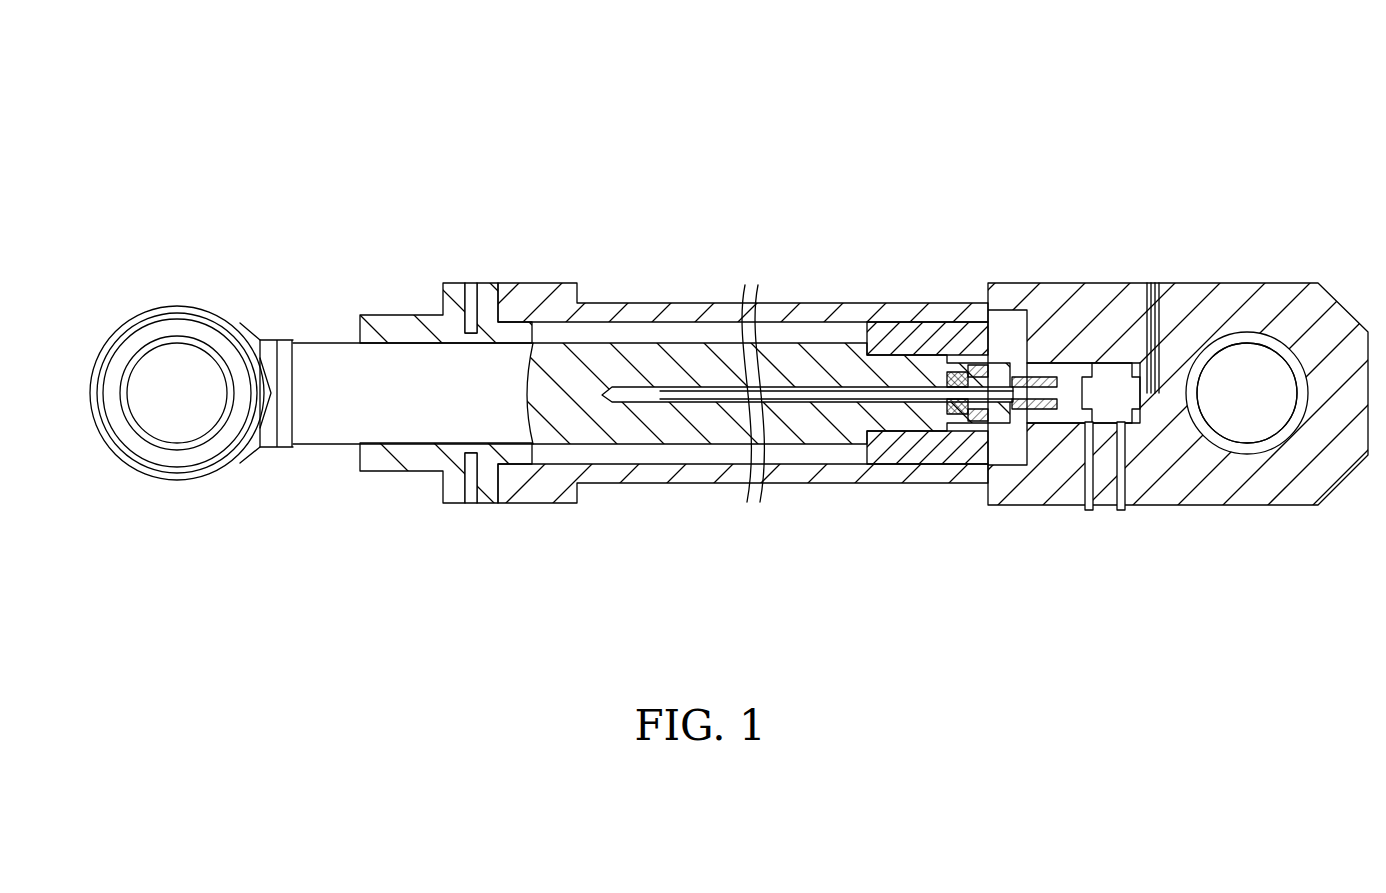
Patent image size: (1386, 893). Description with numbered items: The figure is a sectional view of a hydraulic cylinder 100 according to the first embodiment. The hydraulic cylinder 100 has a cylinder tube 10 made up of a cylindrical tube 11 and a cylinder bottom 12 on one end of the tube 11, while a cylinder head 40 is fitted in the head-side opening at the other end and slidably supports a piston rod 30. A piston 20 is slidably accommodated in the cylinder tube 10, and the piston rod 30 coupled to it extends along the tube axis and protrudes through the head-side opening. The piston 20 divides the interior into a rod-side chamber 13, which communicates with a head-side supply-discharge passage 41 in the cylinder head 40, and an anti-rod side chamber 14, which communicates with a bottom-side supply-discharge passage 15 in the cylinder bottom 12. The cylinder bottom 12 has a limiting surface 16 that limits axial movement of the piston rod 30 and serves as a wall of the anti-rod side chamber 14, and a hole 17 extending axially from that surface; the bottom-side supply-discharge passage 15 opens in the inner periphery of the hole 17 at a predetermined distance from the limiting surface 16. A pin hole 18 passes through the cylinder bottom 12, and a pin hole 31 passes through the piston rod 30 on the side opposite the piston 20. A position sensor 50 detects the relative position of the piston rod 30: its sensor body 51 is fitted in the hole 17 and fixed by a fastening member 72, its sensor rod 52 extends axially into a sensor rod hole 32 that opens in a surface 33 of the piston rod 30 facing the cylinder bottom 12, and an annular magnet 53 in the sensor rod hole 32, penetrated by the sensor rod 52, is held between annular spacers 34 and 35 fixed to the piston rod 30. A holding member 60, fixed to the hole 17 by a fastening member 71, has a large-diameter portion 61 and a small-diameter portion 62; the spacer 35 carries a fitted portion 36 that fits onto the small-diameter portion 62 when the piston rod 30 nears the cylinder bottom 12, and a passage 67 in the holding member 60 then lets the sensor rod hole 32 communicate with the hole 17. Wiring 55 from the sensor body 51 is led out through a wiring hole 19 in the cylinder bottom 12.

The hydraulic cylinder 100 is at (1165, 158).
The cylinder tube 10 is at (1285, 282).
The tube 11 is at (870, 345).
The cylinder bottom 12 is at (1333, 327).
The rod-side chamber 13 is at (820, 332).
The anti-rod side chamber 14 is at (1002, 335).
The bottom-side supply-discharge passage 15 is at (1067, 310).
The limiting surface 16 is at (1018, 345).
The hole 17 is at (1093, 312).
The pin hole 18 is at (1243, 347).
The wiring hole 19 is at (1146, 287).
The piston 20 is at (950, 325).
The piston rod 30 is at (725, 343).
The pin hole 31 is at (181, 350).
The sensor rod hole 32 is at (622, 390).
The surface 33 is at (985, 320).
The annular spacer 34 is at (945, 425).
The annular spacer 35 is at (983, 422).
The fitted portion 36 is at (1003, 410).
The cylinder head 40 is at (410, 325).
The head-side supply-discharge passage 41 is at (474, 285).
The position sensor 50 is at (1117, 413).
The sensor body 51 is at (1110, 420).
The sensor rod 52 is at (856, 440).
The annular magnet 53 is at (957, 420).
The wiring 55 is at (1140, 398).
The holding member 60 is at (1060, 425).
The large-diameter portion 61 is at (1083, 420).
The small-diameter portion 62 is at (1053, 420).
The passage 67 is at (1040, 417).
The fastening member 71 is at (1092, 506).
The fastening member 72 is at (1123, 506).